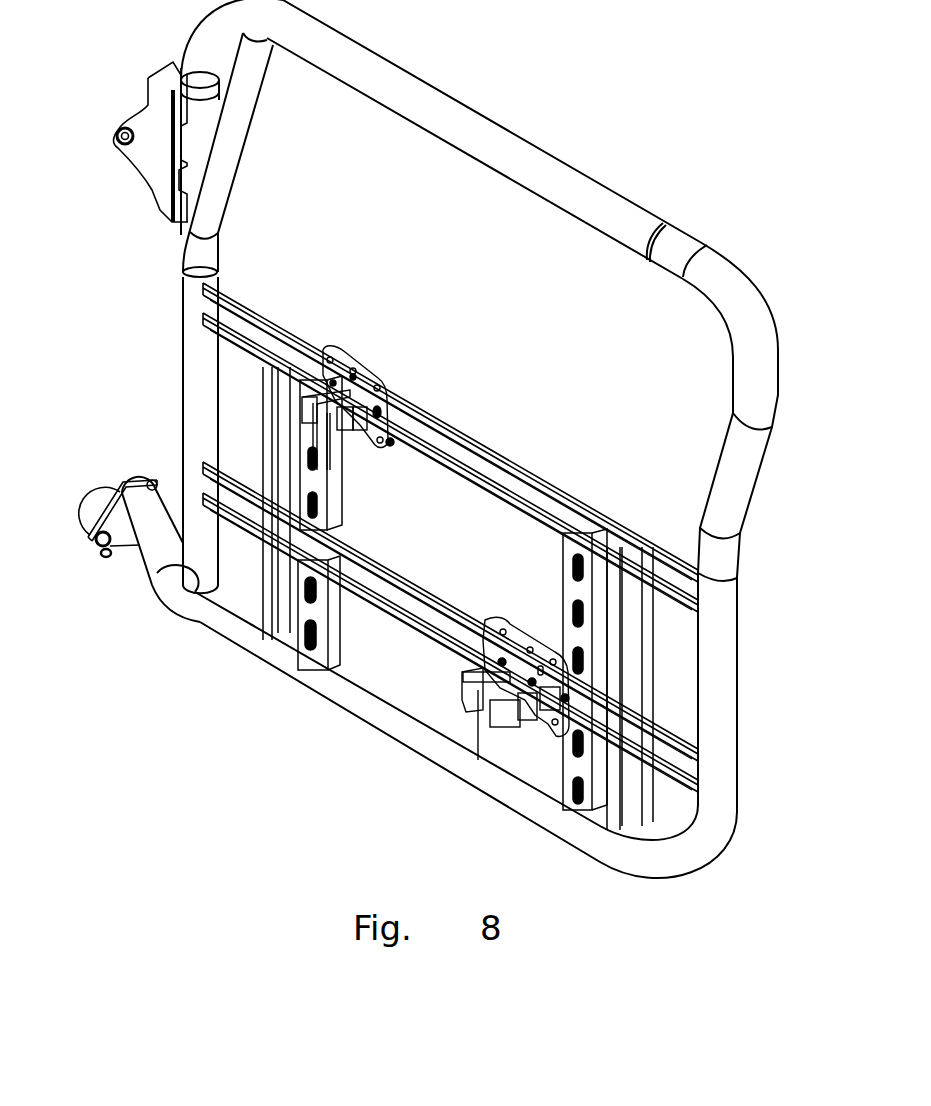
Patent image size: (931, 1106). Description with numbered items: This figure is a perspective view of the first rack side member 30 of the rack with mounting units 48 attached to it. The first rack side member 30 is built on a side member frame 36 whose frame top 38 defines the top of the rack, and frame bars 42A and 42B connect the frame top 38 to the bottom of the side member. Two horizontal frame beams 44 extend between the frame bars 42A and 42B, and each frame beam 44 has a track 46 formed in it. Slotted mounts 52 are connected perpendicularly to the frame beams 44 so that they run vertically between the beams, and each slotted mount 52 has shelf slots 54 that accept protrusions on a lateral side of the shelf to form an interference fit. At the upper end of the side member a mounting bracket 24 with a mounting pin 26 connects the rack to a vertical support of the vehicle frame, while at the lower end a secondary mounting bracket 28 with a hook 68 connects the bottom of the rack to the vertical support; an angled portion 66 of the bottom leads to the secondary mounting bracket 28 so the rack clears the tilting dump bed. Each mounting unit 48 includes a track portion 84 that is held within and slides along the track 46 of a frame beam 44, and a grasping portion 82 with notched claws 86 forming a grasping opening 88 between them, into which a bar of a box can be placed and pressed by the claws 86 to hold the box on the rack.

The mounting bracket 24 is at (155, 172).
The mounting pin 26 is at (120, 143).
The secondary mounting bracket 28 is at (130, 548).
The first rack side member 30 is at (453, 439).
The side member frame 36 is at (745, 485).
The frame top 38 is at (473, 118).
The frame bar 42A is at (180, 371).
The frame bar 42B is at (730, 660).
The frame beam 44 is at (282, 300).
The track 46 is at (495, 470).
The mounting unit 48 is at (397, 572).
The slotted mount 52 is at (262, 448).
The shelf slot 54 is at (585, 662).
The angled portion 66 is at (158, 572).
The hook 68 is at (100, 495).
The grasping portion 82 is at (365, 358).
The track portion 84 is at (395, 398).
The claw 86 is at (300, 403).
The grasping opening 88 is at (388, 443).